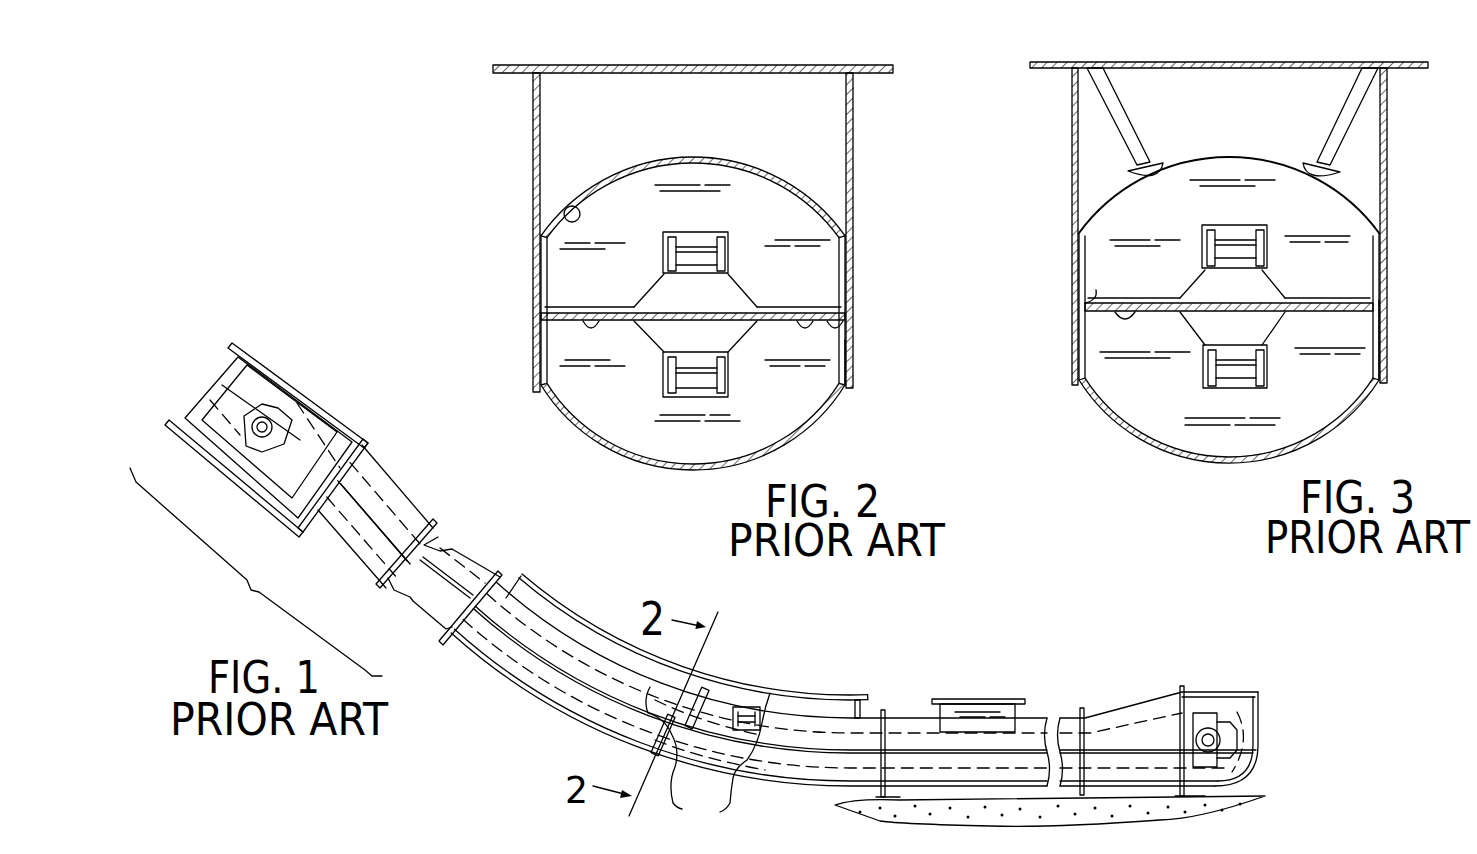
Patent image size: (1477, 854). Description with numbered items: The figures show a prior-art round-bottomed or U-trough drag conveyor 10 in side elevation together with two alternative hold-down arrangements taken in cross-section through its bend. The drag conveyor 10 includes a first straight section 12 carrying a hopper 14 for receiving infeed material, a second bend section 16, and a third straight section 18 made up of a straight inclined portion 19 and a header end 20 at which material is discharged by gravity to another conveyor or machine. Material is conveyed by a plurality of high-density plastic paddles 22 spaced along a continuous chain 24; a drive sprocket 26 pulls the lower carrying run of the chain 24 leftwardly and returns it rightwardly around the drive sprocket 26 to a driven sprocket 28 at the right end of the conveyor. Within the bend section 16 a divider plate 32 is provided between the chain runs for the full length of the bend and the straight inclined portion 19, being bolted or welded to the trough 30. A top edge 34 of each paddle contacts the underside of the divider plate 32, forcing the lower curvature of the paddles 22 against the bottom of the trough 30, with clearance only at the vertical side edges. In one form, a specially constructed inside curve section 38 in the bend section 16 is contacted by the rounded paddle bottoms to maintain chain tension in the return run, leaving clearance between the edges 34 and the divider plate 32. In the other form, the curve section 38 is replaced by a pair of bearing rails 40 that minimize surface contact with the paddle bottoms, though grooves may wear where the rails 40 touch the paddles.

In FIG. 1, the drag conveyor 10 is at (590, 590).
In FIG. 2, the drag conveyor 10 is at (482, 232).
In FIG. 3, the drag conveyor 10 is at (1051, 224).
In FIG. 1, the first straight section 12 is at (1015, 778).
In FIG. 1, the hopper 14 is at (964, 700).
In FIG. 1, the second bend section 16 is at (557, 723).
In FIG. 2, the second bend section 16 is at (848, 398).
In FIG. 3, the second bend section 16 is at (1092, 412).
In FIG. 1, the third straight section 18 is at (245, 593).
In FIG. 1, the straight inclined portion 19 is at (437, 625).
In FIG. 1, the header end 20 is at (249, 440).
In FIG. 1, the paddles 22 is at (710, 764).
In FIG. 2, the paddles 22 is at (672, 220).
In FIG. 3, the paddles 22 is at (1356, 220).
In FIG. 1, the continuous chain 24 is at (748, 712).
In FIG. 2, the continuous chain 24 is at (710, 357).
In FIG. 3, the continuous chain 24 is at (1247, 362).
In FIG. 1, the drive sprocket 26 is at (232, 398).
In FIG. 1, the driven sprocket 28 is at (1260, 715).
In FIG. 2, the trough 30 is at (857, 355).
In FIG. 3, the trough 30 is at (1385, 265).
In FIG. 2, the divider plate 32 is at (856, 318).
In FIG. 3, the divider plate 32 is at (1198, 303).
In FIG. 2, the top edge 34 is at (585, 308).
In FIG. 3, the top edge 34 is at (1118, 307).
In FIG. 1, the inside curve section 38 is at (705, 700).
In FIG. 2, the inside curve section 38 is at (560, 206).
In FIG. 3, the bearing rails 40 is at (1302, 165).